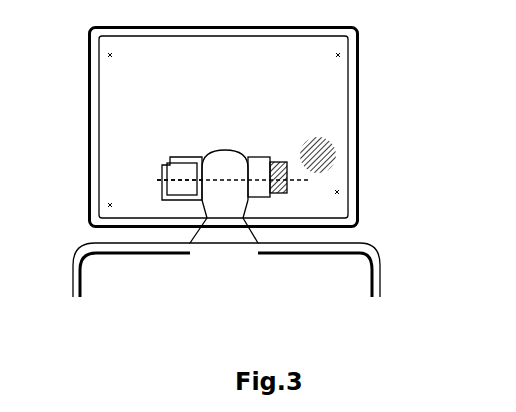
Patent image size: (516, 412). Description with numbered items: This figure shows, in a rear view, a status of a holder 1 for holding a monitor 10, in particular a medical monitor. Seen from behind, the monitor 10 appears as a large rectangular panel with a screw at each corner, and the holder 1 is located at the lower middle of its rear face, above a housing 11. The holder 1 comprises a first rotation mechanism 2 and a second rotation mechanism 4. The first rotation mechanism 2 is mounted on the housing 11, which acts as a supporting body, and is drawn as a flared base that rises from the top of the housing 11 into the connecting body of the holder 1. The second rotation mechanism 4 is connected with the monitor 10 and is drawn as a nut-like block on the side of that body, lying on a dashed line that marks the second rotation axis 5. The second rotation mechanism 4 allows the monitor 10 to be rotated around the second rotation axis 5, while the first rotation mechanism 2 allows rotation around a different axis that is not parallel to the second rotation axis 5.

The monitor 10 is at (337, 85).
The holder 1 is at (232, 205).
The second rotation mechanism 4 is at (185, 175).
The second rotation axis 5 is at (145, 180).
The first rotation mechanism 2 is at (220, 212).
The housing 11 is at (358, 278).